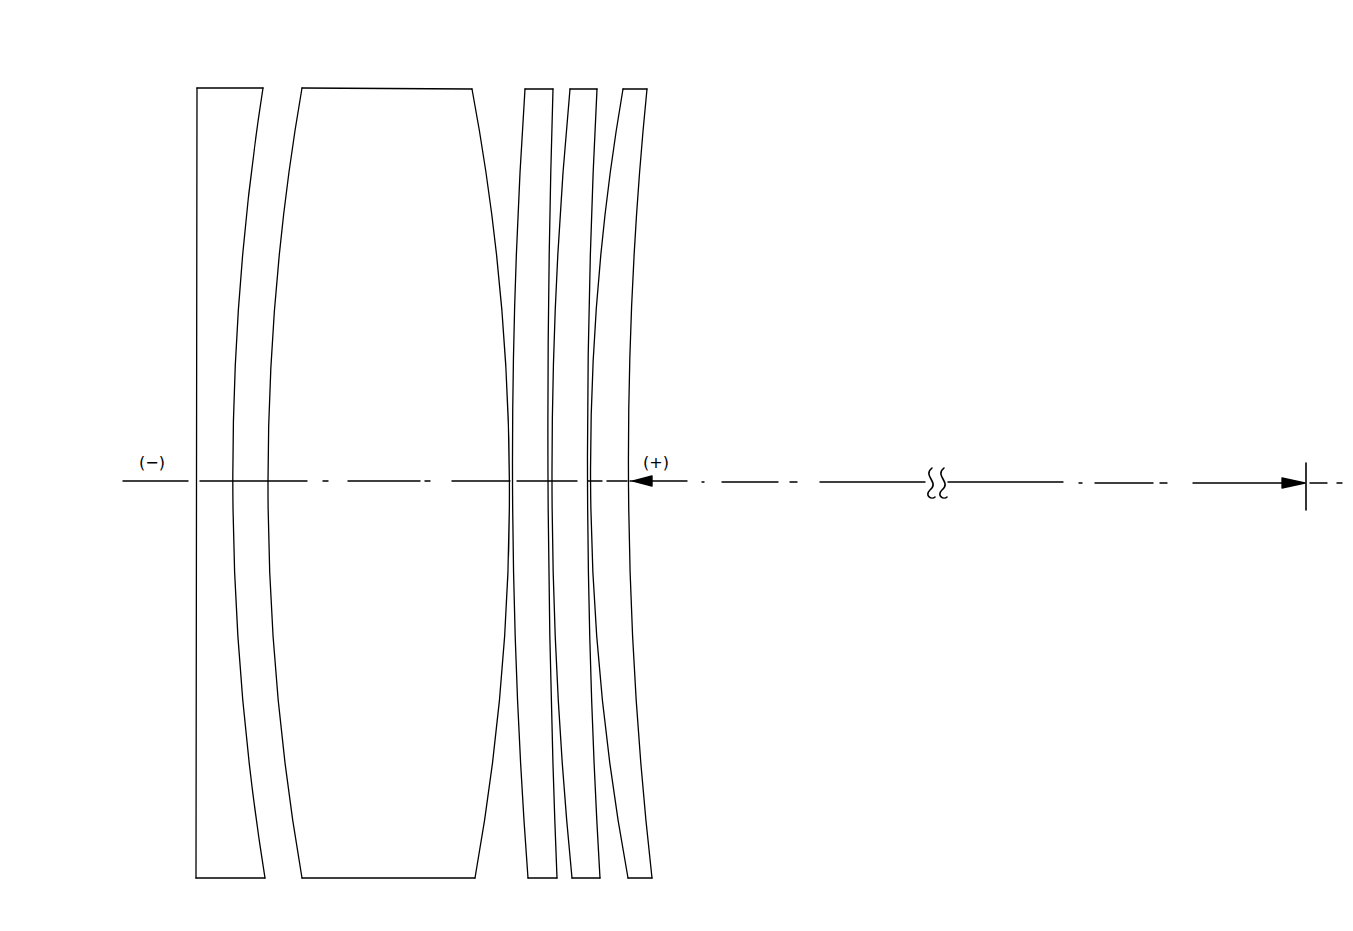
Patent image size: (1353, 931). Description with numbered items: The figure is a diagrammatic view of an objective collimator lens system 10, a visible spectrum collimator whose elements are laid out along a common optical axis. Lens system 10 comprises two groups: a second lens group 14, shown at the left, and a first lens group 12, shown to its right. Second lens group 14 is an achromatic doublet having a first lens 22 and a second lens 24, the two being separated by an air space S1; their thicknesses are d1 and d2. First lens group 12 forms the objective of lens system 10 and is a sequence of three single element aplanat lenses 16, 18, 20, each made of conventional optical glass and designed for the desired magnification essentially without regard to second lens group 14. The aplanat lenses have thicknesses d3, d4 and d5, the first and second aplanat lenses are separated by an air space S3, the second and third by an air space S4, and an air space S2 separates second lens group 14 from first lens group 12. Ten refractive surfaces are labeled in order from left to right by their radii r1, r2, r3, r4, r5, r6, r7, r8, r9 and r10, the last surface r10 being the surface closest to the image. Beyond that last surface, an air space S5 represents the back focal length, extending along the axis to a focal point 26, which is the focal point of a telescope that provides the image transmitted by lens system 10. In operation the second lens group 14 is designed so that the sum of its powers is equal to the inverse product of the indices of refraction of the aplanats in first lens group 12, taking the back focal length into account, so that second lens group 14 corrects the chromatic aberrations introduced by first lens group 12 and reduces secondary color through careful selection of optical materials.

The objective collimator lens system 10 is at (700, 101).
The first lens group 12 is at (657, 71).
The second lens group 14 is at (473, 71).
The aplanat lens 16 is at (655, 471).
The aplanat lens 18 is at (629, 472).
The aplanat lens 20 is at (602, 472).
The first lens 22 is at (339, 472).
The second lens 24 is at (202, 472).
The focal point 26 is at (1303, 488).
The radius of first refractive surface r1 is at (197, 135).
The radius of second refractive surface r2 is at (266, 98).
The radius of third refractive surface r3 is at (302, 98).
The radius of fourth refractive surface r4 is at (490, 472).
The radius of fifth refractive surface r5 is at (524, 110).
The radius of sixth refractive surface r6 is at (553, 97).
The radius of seventh refractive surface r7 is at (570, 96).
The radius of eighth refractive surface r8 is at (598, 98).
The radius of ninth refractive surface r9 is at (623, 97).
The radius of tenth refractive surface r10 is at (646, 106).
The thickness of first doublet lens d1 is at (217, 484).
The thickness of second doublet lens d2 is at (360, 482).
The thickness of first aplanat lens d3 is at (528, 478).
The thickness of second aplanat lens d4 is at (569, 478).
The thickness of third aplanat lens d5 is at (610, 482).
The air space between doublet lenses S1 is at (248, 484).
The air space between lens groups S2 is at (510, 483).
The air space between first and second aplanat lenses S3 is at (548, 485).
The air space between second and third aplanat lenses S4 is at (590, 485).
The back focal air space S5 is at (762, 482).